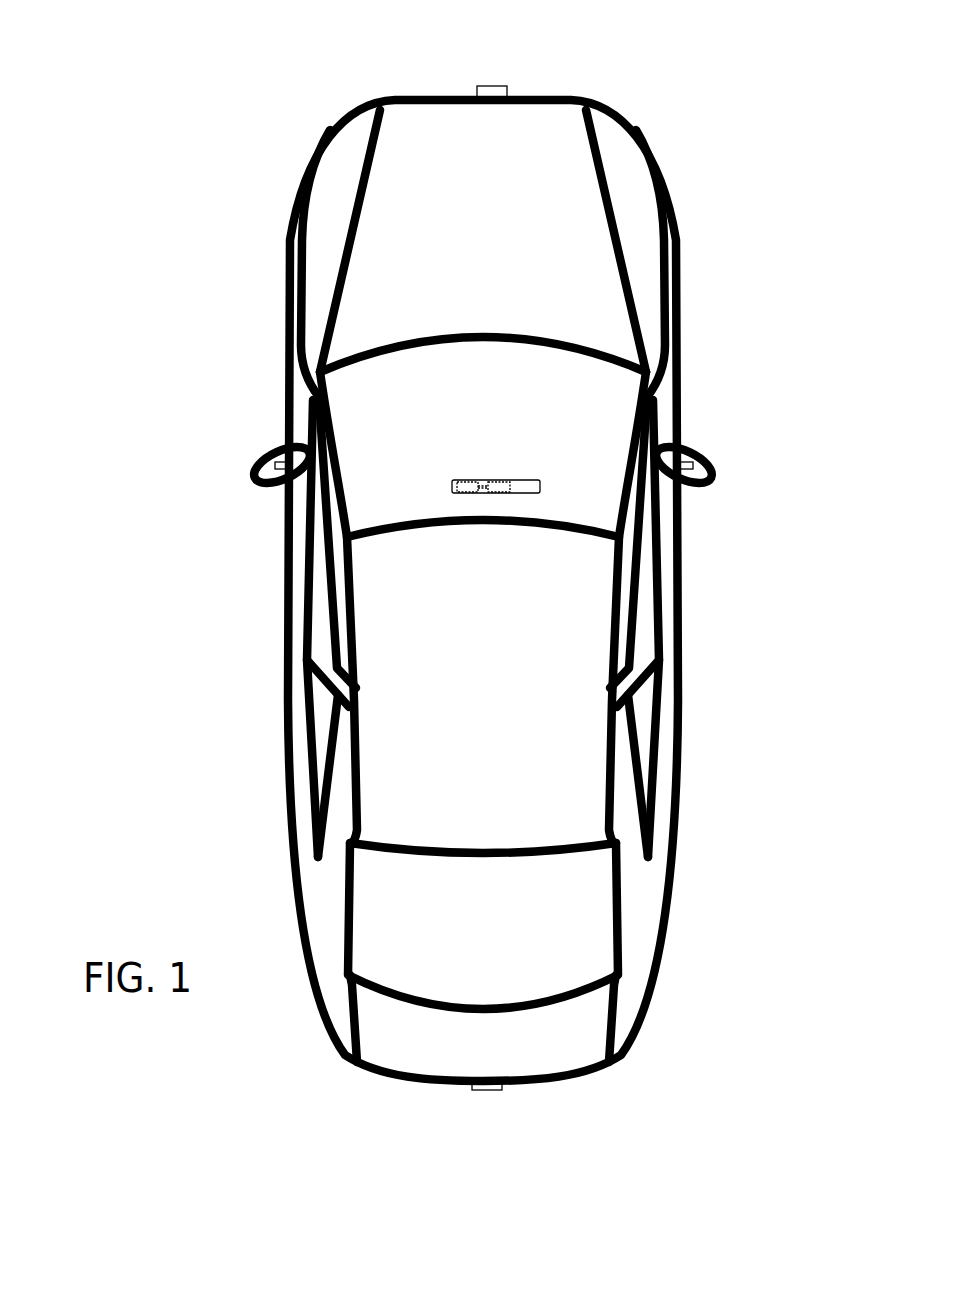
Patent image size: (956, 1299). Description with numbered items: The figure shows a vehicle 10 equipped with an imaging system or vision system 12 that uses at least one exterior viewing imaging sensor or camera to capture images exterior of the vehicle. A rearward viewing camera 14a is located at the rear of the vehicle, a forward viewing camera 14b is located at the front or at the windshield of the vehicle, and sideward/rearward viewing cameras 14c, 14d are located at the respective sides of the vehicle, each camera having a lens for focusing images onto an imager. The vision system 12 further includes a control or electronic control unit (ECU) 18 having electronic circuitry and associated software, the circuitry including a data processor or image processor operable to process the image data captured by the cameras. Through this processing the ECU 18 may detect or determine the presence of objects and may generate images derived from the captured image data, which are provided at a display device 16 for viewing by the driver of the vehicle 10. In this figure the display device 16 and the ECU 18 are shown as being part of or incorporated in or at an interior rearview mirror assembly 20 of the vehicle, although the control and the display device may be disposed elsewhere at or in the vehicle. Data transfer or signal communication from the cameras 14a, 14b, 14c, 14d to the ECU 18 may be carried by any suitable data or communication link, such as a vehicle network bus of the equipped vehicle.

The vehicle 10 is at (235, 190).
The vision system 12 is at (437, 1112).
The rearward viewing camera 14a is at (490, 1089).
The forward viewing camera 14b is at (497, 86).
The sideward/rearward viewing camera 14c is at (278, 462).
The sideward/rearward viewing camera 14d is at (695, 462).
The display device 16 is at (468, 480).
The electronic control unit (ECU) 18 is at (492, 480).
The interior rearview mirror assembly 20 is at (540, 480).